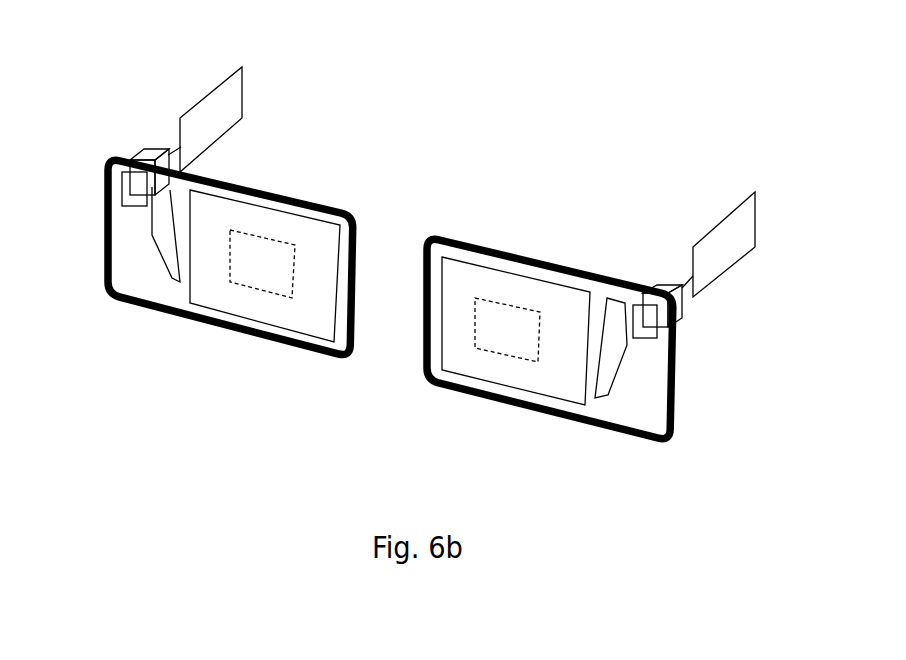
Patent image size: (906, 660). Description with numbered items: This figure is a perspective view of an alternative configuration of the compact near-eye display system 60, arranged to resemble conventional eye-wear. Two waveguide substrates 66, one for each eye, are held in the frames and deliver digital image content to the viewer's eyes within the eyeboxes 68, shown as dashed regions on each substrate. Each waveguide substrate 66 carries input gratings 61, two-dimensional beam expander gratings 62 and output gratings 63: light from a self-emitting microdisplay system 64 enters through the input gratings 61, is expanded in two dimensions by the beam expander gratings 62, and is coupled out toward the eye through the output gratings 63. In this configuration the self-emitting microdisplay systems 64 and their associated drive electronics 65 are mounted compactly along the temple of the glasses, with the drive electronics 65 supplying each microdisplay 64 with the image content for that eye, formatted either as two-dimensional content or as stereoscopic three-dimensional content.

The near-eye display system 60 is at (556, 88).
The input gratings 61 is at (127, 182).
The 2D beam expander gratings 62 is at (162, 245).
The output gratings 63 is at (497, 280).
The self-emitting microdisplay system 64 is at (140, 167).
The drive electronics 65 is at (227, 88).
The waveguide substrate 66 is at (488, 392).
The eyebox 68 is at (230, 272).